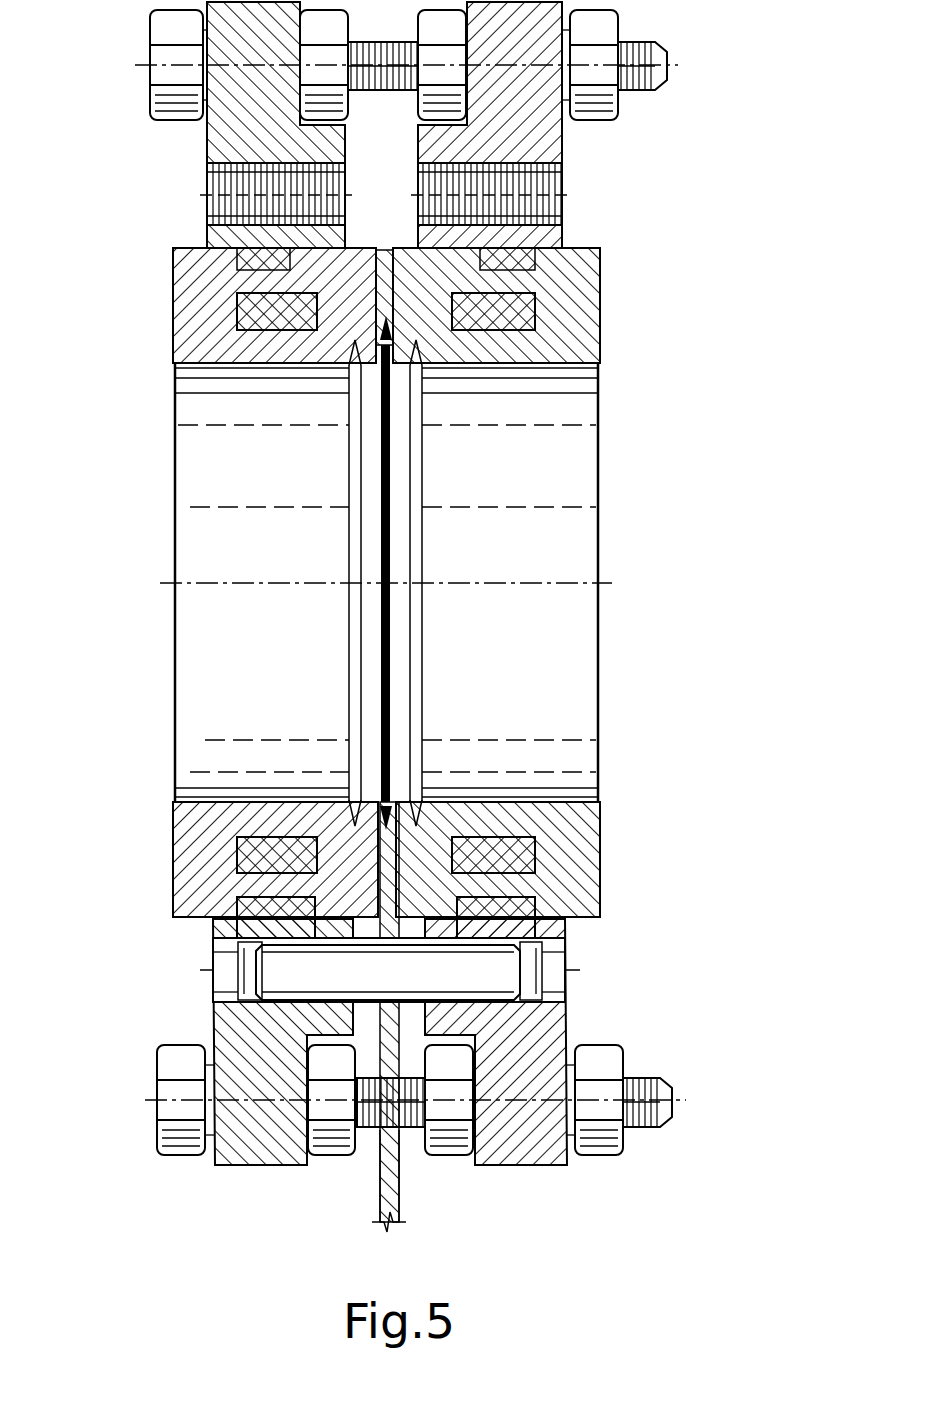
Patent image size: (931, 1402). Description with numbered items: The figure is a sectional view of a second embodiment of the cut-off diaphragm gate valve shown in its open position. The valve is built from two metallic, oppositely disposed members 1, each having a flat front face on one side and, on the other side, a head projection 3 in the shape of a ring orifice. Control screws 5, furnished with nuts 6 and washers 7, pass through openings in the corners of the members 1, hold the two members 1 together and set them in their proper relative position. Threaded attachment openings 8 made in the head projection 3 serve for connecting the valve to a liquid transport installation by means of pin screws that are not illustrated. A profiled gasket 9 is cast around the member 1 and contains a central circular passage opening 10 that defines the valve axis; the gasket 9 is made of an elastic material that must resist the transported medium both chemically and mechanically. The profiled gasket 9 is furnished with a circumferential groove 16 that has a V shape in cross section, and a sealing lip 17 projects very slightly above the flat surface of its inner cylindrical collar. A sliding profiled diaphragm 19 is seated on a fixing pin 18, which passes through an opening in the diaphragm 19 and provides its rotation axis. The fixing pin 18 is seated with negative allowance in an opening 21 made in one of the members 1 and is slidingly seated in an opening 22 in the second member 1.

The member 1 is at (243, 1135).
The head projection 3 is at (370, 1125).
The control screw 5 is at (657, 42).
The nut 6 is at (600, 100).
The washer 7 is at (563, 120).
The threaded attachment opening 8 is at (563, 218).
The profiled gasket 9 is at (213, 328).
The central circular passage opening 10 is at (243, 548).
The circumferential groove 16 is at (350, 473).
The sealing lip 17 is at (421, 790).
The fixing pin 18 is at (566, 985).
The sliding profiled diaphragm 19 is at (400, 1182).
The opening 21 is at (213, 966).
The opening 22 is at (562, 968).